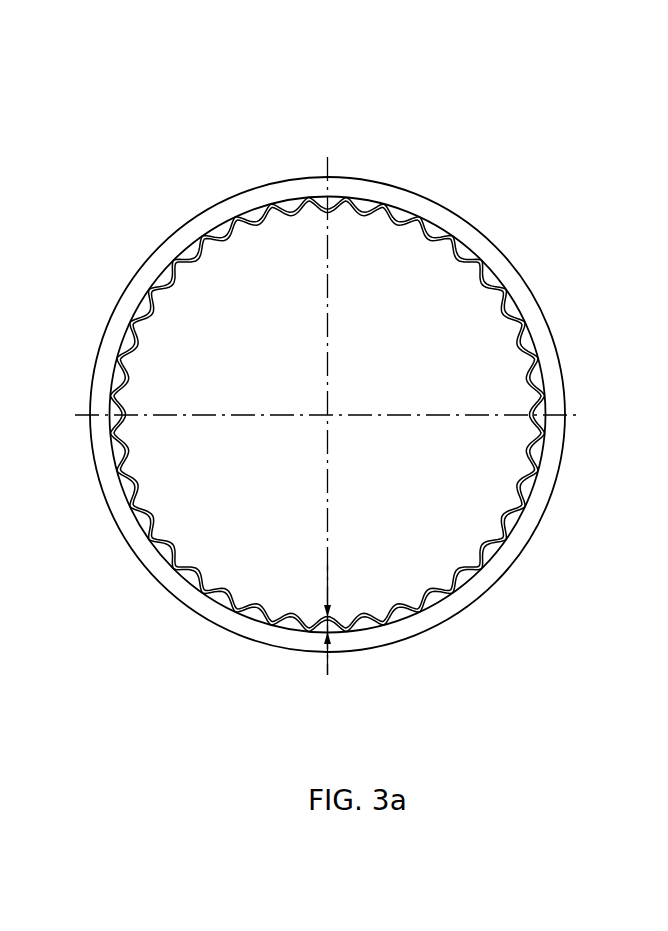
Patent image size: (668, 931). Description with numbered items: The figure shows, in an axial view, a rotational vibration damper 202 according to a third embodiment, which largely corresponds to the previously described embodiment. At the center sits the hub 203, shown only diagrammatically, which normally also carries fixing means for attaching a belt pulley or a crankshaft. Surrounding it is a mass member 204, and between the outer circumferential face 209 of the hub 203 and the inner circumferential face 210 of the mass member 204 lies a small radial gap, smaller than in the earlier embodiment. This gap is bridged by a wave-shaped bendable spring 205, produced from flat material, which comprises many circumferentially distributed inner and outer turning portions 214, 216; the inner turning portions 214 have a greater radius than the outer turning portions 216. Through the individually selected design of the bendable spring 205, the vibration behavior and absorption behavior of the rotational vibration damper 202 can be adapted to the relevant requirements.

The rotational vibration damper 202 is at (253, 100).
The hub 203 is at (397, 493).
The outer wall 204 is at (497, 565).
The wave-shaped bendable spring 205 is at (460, 252).
The outer circumferential face 209 is at (537, 467).
The inner circumferential face 210 is at (515, 520).
The inner turning portions 214 is at (518, 343).
The outer turning portions 216 is at (503, 290).